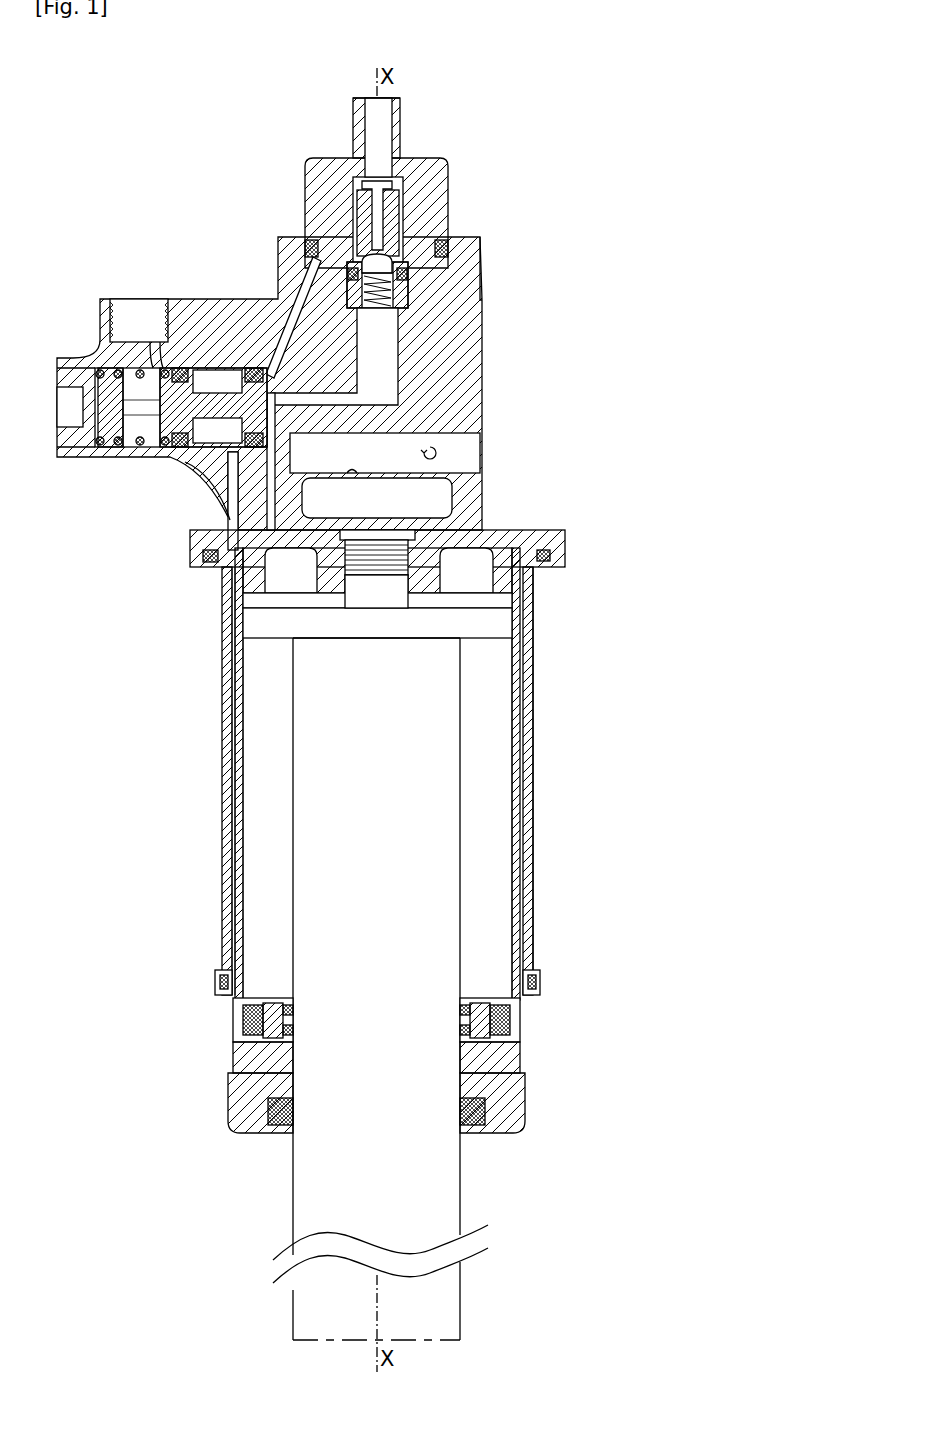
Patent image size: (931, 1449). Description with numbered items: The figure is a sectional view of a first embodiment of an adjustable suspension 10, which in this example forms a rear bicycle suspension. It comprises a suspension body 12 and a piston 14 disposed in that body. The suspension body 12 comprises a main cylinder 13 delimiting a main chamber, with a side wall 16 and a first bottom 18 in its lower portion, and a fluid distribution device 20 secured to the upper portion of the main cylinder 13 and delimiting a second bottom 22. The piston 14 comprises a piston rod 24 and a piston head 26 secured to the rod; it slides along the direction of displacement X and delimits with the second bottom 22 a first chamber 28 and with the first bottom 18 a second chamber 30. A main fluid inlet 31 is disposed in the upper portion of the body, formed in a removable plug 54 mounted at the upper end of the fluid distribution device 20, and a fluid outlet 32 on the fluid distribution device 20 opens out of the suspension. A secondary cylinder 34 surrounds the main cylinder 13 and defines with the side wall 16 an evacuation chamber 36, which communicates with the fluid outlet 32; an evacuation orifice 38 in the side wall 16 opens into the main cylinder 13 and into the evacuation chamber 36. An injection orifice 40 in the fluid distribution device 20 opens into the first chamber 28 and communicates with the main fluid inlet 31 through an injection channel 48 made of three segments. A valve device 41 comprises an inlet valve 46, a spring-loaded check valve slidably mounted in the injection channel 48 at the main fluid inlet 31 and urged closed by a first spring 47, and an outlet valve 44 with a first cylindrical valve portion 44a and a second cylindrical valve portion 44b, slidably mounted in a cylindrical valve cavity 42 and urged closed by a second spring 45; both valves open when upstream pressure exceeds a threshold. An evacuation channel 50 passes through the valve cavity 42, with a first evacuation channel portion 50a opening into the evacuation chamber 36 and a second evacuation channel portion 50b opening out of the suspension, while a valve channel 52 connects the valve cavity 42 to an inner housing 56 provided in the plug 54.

The adjustable suspension 10 is at (555, 162).
The suspension body 12 is at (520, 1020).
The main cylinder 13 is at (525, 762).
The piston 14 is at (440, 1204).
The side wall 16 is at (522, 724).
The first bottom 18 is at (532, 976).
The fluid distribution device 20 is at (482, 350).
The second bottom 22 is at (478, 540).
The piston rod 24 is at (420, 700).
The piston head 26 is at (505, 627).
The first chamber 28 is at (500, 601).
The second chamber 30 is at (495, 810).
The main fluid inlet 31 is at (400, 118).
The fluid outlet 32 is at (128, 318).
The secondary cylinder 34 is at (225, 915).
The evacuation chamber 36 is at (228, 752).
The evacuation orifice 38 is at (238, 862).
The injection orifice 40 is at (282, 540).
The valve device 41 is at (300, 163).
The cylindrical valve cavity 42 is at (131, 457).
The outlet valve 44 is at (156, 450).
The first cylindrical valve portion 44a is at (265, 368).
The second cylindrical valve portion 44b is at (165, 409).
The second spring 45 is at (97, 450).
The inlet valve 46 is at (358, 286).
The first spring 47 is at (397, 306).
The injection channel 48 is at (388, 348).
The evacuation channel 50 is at (205, 560).
The first evacuation channel portion 50a is at (216, 480).
The second evacuation channel portion 50b is at (150, 345).
The valve channel 52 is at (280, 296).
The removable plug 54 is at (446, 170).
The inner housing 56 is at (345, 262).